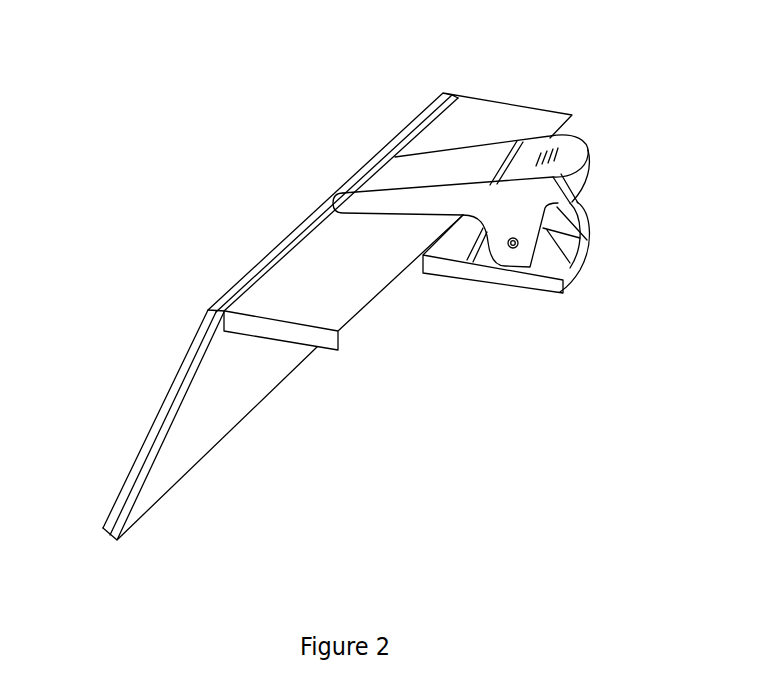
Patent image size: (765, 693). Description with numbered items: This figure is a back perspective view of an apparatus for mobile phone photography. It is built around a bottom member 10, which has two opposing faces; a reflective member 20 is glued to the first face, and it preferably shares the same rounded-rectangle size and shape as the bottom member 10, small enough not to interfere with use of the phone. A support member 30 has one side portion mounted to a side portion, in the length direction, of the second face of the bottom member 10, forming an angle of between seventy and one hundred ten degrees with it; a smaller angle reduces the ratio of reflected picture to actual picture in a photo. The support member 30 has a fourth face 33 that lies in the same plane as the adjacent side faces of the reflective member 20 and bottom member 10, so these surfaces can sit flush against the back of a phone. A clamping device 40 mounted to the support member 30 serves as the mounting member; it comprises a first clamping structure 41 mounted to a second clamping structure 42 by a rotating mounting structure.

The bottom member 10 is at (217, 445).
The reflective member 20 is at (177, 387).
The support member 30 is at (352, 327).
The fourth face 33 is at (323, 273).
The clamping device 40 is at (585, 262).
The first clamping structure 41 is at (457, 267).
The second clamping structure 42 is at (405, 172).